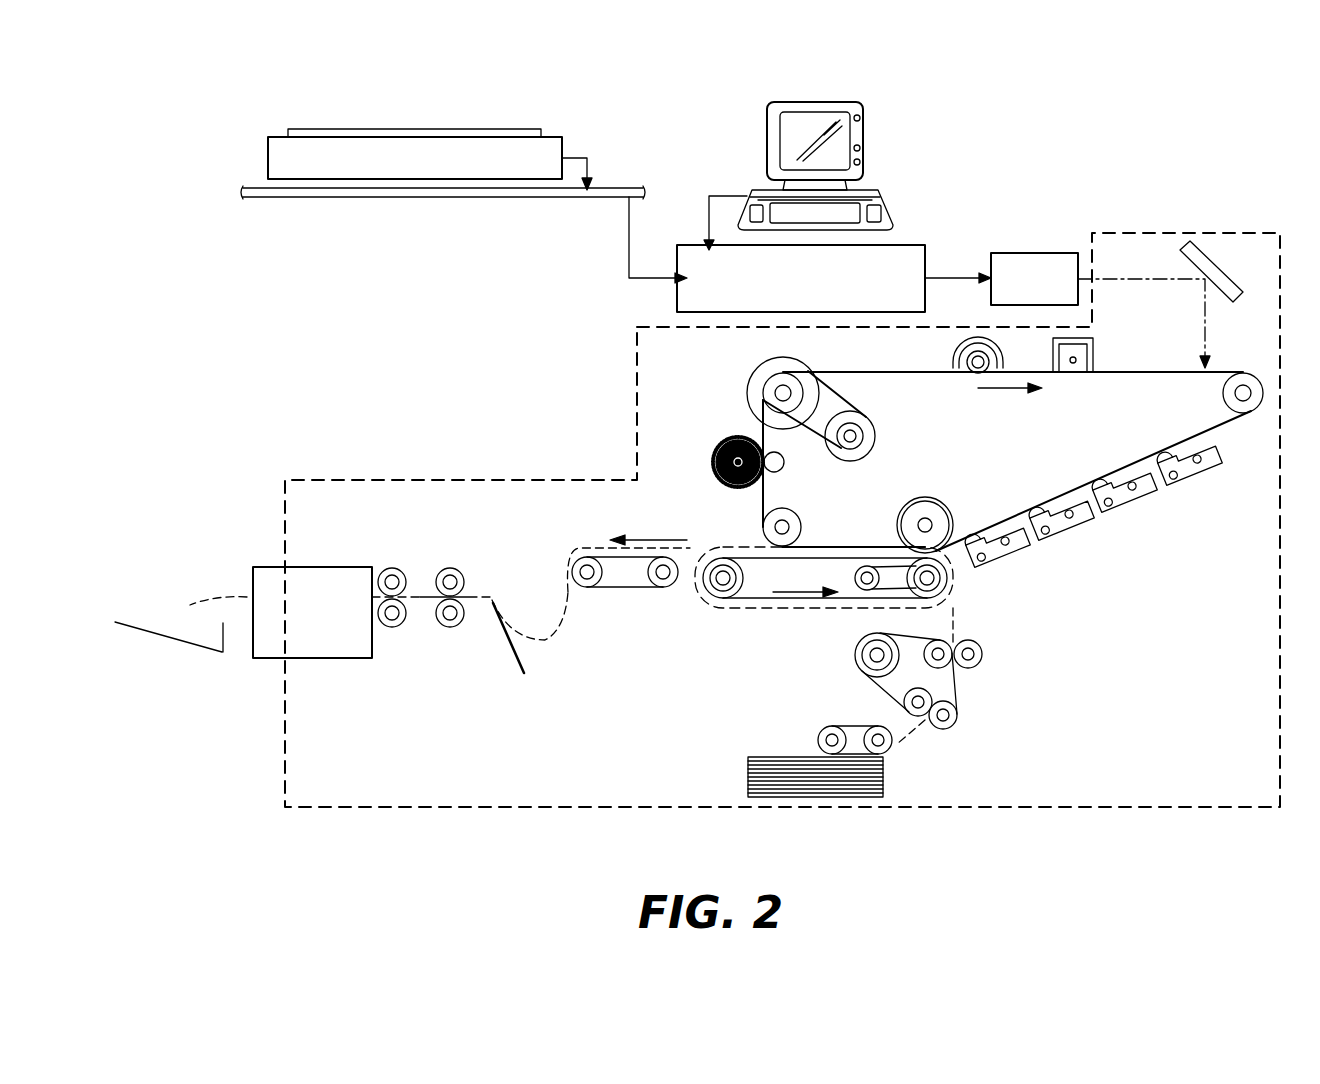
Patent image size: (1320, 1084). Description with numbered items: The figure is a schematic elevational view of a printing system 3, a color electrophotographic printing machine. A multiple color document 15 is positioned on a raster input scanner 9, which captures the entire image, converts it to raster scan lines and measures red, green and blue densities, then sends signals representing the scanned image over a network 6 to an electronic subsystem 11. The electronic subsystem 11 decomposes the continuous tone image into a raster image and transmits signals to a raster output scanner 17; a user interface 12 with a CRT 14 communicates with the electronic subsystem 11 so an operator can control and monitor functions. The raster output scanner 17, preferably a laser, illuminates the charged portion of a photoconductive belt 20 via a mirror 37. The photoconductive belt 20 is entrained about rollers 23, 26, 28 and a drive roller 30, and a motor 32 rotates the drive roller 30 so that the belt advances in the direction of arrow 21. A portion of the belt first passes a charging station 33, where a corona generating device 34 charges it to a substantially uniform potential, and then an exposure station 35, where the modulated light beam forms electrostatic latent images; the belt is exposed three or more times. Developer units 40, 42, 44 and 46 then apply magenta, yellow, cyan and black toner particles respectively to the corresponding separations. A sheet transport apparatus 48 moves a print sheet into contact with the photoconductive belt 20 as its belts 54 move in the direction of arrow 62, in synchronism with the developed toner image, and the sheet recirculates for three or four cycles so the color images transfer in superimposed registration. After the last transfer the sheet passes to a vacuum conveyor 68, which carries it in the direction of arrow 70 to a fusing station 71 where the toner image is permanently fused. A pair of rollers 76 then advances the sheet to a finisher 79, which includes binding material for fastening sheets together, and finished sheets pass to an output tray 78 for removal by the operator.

The printing system 3 is at (1225, 228).
The network 6 is at (318, 200).
The raster input scanner 9 is at (430, 161).
The electronic subsystem 11 is at (898, 245).
The user interface 12 is at (813, 166).
The CRT 14 is at (845, 131).
The multiple color document 15 is at (412, 130).
The raster output scanner 17 is at (1022, 253).
The photoconductive belt 20 is at (1162, 372).
The arrow 21 is at (998, 388).
The roller 23 is at (794, 518).
The roller 26 is at (940, 500).
The roller 28 is at (1248, 412).
The drive roller 30 is at (760, 370).
The motor 32 is at (870, 422).
The charging station 33 is at (1100, 366).
The corona generating device 34 is at (1052, 362).
The exposure station 35 is at (1218, 364).
The mirror 37 is at (1213, 268).
The developer unit 40 is at (1190, 478).
The developer unit 42 is at (1128, 506).
The developer unit 44 is at (1066, 533).
The developer unit 46 is at (1005, 560).
The sheet transport apparatus 48 is at (808, 606).
The belts 54 is at (838, 602).
The arrow 62 is at (815, 590).
The vacuum conveyor 68 is at (636, 590).
The arrow 70 is at (640, 540).
The fusing station 71 is at (451, 554).
The pair of rollers 76 is at (398, 570).
The output tray 78 is at (180, 645).
The finisher 79 is at (310, 567).